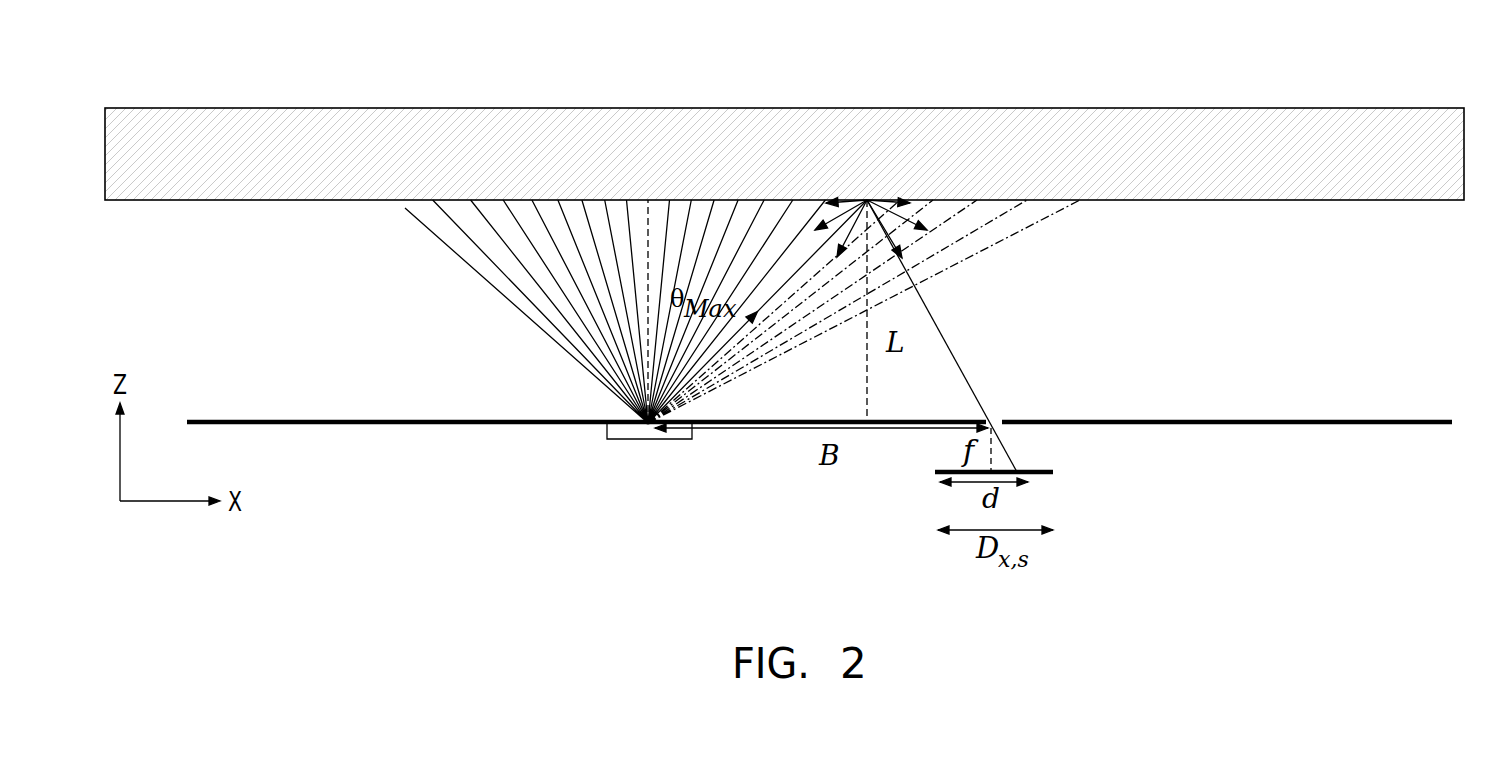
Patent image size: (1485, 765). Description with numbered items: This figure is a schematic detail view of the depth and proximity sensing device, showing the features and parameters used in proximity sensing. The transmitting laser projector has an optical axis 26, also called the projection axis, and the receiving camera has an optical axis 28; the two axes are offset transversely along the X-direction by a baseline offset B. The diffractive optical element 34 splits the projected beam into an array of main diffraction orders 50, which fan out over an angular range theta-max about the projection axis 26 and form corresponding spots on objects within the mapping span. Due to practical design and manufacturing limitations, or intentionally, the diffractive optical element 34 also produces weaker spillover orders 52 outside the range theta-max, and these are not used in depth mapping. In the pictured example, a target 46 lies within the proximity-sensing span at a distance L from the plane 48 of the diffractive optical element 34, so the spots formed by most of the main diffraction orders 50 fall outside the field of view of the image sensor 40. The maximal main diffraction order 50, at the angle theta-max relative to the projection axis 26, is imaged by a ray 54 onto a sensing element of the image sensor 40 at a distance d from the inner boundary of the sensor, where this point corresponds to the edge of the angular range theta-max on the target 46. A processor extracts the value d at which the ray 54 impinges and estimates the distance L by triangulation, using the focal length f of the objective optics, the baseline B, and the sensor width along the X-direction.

The optical axis 26 is at (649, 232).
The optical axis 28 is at (995, 460).
The diffractive optical element 34 is at (625, 440).
The image sensor 40 is at (1045, 476).
The target 46 is at (875, 108).
The plane 48 is at (1228, 421).
The main diffraction orders 50 is at (557, 285).
The spillover orders 52 is at (967, 240).
The ray 54 is at (953, 360).